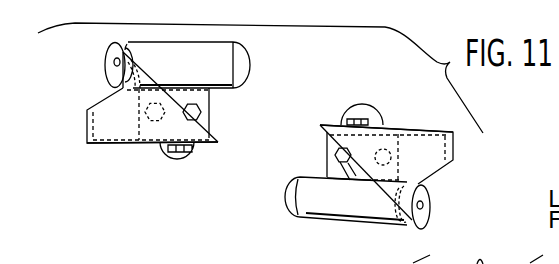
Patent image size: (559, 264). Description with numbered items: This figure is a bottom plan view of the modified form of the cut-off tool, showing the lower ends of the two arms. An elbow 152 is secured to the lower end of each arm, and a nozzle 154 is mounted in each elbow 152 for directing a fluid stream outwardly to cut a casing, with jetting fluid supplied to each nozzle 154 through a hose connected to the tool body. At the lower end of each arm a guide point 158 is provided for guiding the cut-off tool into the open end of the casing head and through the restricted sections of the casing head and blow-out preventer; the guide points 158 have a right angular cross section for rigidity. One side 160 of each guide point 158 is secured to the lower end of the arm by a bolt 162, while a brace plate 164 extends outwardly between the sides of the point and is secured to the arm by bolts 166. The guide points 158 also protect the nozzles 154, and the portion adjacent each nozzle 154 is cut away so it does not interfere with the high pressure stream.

The elbow 152 is at (222, 66).
The nozzle 154 is at (106, 62).
The guide point 158 is at (80, 123).
The side 160 is at (123, 146).
The bolt 162 is at (187, 157).
The brace plate 164 is at (202, 97).
The bolt 166 is at (166, 90).